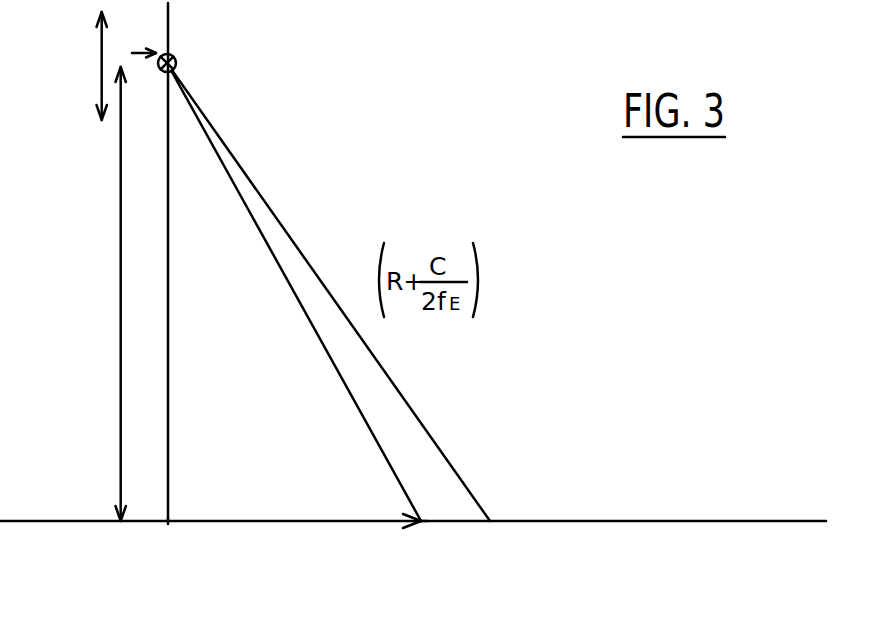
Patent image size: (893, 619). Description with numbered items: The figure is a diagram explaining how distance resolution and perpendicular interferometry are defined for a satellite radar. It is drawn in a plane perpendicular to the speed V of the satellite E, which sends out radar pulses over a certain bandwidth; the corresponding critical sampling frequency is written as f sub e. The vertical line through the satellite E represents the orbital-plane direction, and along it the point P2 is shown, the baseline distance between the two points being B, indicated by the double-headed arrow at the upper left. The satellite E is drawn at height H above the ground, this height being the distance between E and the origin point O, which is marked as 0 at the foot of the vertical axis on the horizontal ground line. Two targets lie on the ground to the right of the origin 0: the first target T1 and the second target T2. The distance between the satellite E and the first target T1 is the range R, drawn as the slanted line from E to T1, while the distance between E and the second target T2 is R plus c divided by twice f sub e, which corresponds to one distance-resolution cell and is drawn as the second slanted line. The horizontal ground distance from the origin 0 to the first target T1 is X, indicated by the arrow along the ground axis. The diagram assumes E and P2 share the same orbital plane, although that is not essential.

The distance between T1 and O X is at (413, 540).
The origin point O 0 is at (170, 541).
The receiver P2 is at (152, 262).
The distance between P1 and P2 B is at (88, 66).
The distance between E and O H is at (132, 294).
The speed V is at (144, 69).
The satellite E is at (175, 47).
The distance between E and T1 R is at (296, 296).
The first target T1 is at (424, 554).
The second target T2 is at (339, 329).